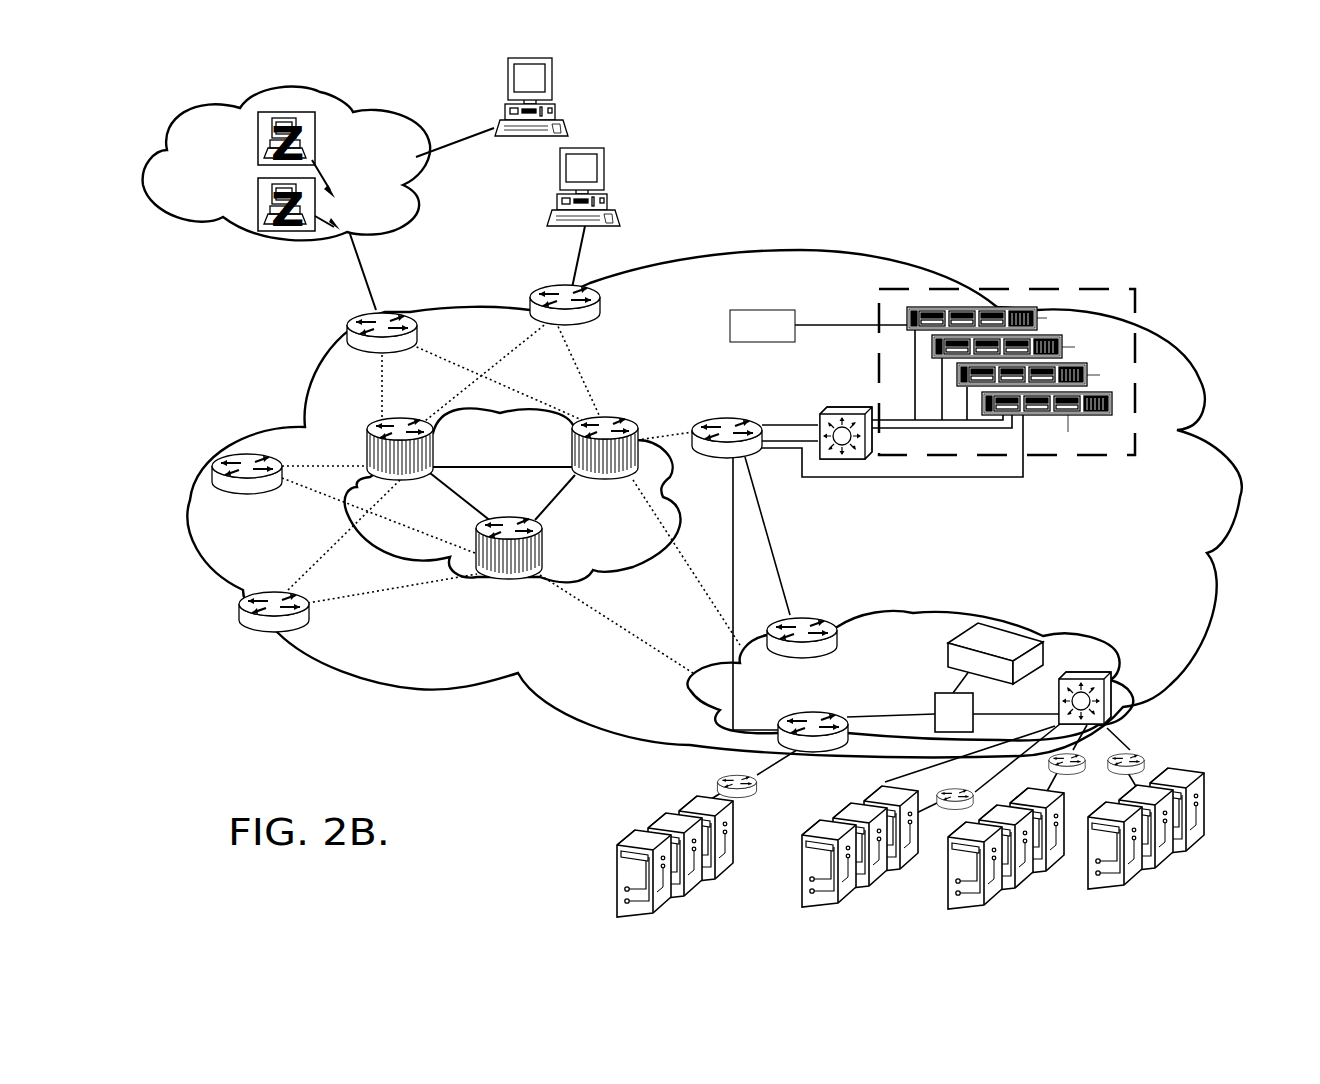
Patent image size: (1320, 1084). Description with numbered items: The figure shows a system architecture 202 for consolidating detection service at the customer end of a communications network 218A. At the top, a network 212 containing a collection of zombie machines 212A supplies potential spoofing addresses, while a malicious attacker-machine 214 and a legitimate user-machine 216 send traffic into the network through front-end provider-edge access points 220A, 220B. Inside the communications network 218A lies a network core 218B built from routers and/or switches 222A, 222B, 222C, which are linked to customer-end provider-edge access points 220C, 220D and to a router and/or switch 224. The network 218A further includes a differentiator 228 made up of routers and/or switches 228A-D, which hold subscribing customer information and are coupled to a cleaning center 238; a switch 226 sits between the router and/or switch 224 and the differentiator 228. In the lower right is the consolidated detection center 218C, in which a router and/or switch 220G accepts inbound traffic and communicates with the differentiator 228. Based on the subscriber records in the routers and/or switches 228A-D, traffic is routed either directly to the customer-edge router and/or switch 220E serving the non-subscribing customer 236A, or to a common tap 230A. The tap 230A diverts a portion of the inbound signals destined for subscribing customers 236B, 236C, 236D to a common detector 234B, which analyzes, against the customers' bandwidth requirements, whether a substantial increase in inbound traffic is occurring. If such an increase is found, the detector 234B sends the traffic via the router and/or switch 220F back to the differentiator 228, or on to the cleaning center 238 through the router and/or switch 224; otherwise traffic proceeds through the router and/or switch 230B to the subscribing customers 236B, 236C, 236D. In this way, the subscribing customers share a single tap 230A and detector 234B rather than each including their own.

The system architecture 202 is at (886, 94).
The network 212 is at (292, 93).
The zombie machines 212A is at (257, 134).
The malicious attacker-machine 214 is at (555, 76).
The legitimate user-machine 216 is at (606, 165).
The communications network 218A is at (762, 253).
The network core 218B is at (651, 561).
The detection center 218C is at (925, 613).
The front-end provider-edge access point 220A is at (546, 290).
The front-end provider-edge access point 220B is at (352, 316).
The customer-end provider-edge access point 220C is at (231, 453).
The customer-end provider-edge access point 220D is at (247, 613).
The customer-edge router 220E is at (760, 785).
The router and/or switch 220F is at (812, 621).
The router and/or switch 220G is at (853, 695).
The router and/or switch 222A is at (650, 398).
The router and/or switch 222B is at (515, 586).
The router and/or switch 222C is at (376, 436).
The router and/or switch 224 is at (729, 415).
The switch 226 is at (846, 408).
The differentiator 228 is at (1034, 292).
The routers and/or switches 228A-D is at (1100, 350).
The common tap 230A is at (941, 692).
The router and/or switch 230B is at (1094, 670).
The detector 234B is at (1042, 645).
The customer 236A is at (638, 814).
The customer 236B is at (885, 897).
The customer 236C is at (1045, 899).
The customer 236D is at (1206, 784).
The cleaning center 238 is at (758, 310).